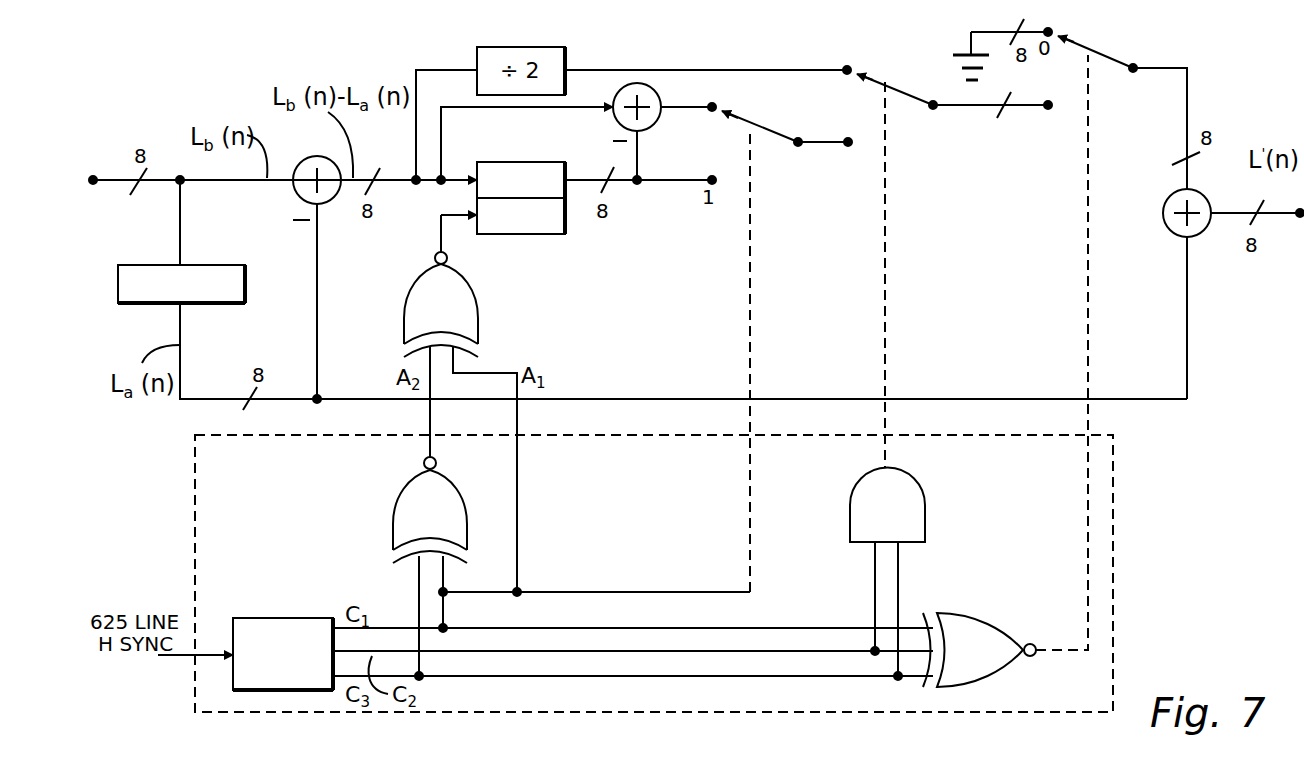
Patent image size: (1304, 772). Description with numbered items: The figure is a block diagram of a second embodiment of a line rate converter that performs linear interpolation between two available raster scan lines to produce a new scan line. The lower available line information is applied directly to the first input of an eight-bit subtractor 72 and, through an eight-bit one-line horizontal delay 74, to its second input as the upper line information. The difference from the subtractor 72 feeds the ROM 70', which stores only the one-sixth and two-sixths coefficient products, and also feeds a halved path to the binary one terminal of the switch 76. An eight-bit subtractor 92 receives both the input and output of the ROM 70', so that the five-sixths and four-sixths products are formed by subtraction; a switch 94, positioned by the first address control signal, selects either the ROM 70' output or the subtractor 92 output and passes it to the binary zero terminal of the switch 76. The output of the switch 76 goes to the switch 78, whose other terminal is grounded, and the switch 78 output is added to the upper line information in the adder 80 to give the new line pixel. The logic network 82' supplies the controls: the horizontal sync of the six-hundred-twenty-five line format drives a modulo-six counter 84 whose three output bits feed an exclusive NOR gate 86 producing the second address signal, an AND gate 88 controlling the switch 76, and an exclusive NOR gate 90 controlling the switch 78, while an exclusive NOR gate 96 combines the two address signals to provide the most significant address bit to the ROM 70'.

The ROM 70' is at (521, 227).
The subtractor 72 is at (293, 193).
The 1H delay 74 is at (207, 263).
The switch 76 is at (906, 92).
The switch 78 is at (1115, 55).
The adder 80 is at (1163, 222).
The logic network 82' is at (612, 572).
The modulo 6 counter 84 is at (299, 617).
The exclusive NOR gate 86 is at (408, 488).
The AND gate 88 is at (857, 484).
The exclusive NOR gate 90 is at (995, 616).
The subtractor 92 is at (613, 126).
The switch 94 is at (770, 127).
The exclusive NOR gate 96 is at (413, 296).